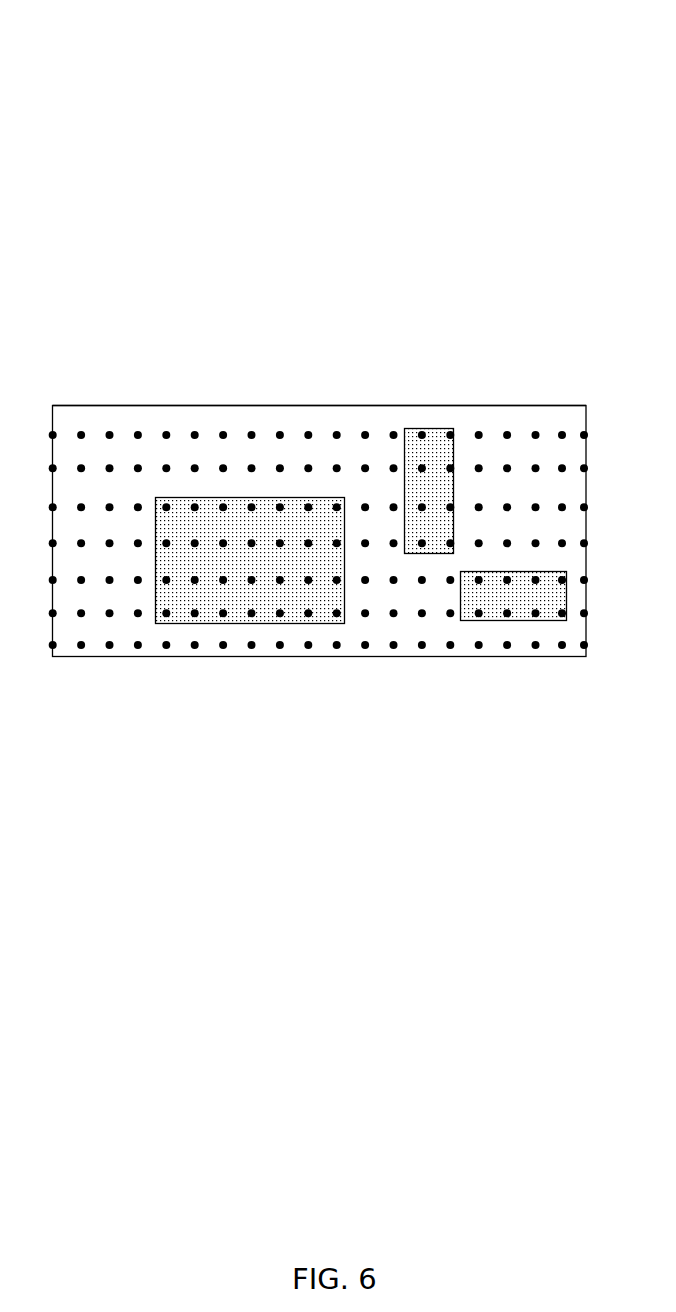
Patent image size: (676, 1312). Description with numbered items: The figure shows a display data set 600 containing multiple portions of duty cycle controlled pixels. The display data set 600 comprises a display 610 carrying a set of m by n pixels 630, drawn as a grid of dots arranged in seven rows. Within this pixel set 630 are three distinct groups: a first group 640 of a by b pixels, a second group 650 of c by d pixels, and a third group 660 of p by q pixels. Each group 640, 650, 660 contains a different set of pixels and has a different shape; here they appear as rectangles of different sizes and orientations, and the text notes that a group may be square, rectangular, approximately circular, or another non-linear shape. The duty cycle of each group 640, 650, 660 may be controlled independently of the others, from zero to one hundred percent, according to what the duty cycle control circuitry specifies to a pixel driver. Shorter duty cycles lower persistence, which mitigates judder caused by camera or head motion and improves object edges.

The display data set 600 is at (278, 65).
The display 610 is at (133, 398).
The set of m by n pixels 630 is at (253, 413).
The first group of pixels 640 is at (283, 623).
The second group of pixels 650 is at (530, 614).
The third group of pixels 660 is at (433, 430).